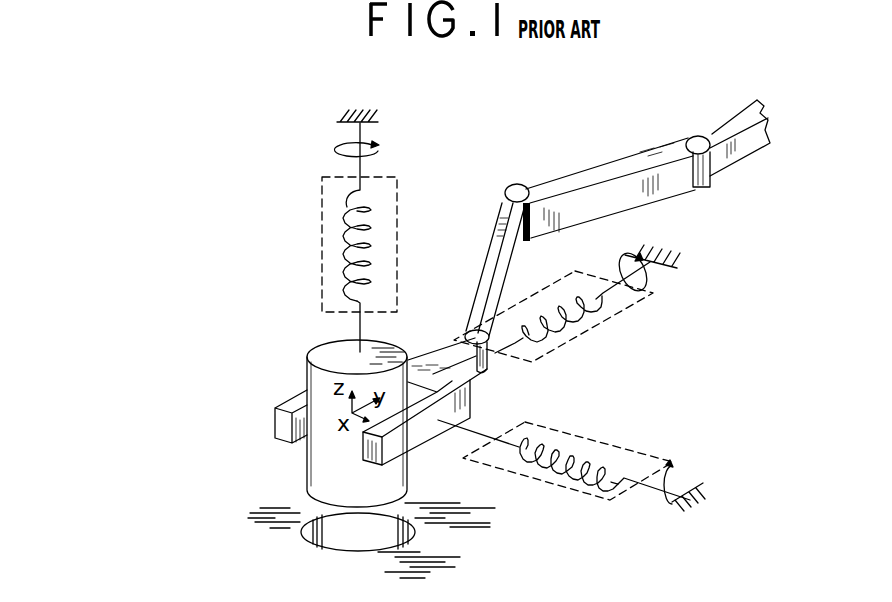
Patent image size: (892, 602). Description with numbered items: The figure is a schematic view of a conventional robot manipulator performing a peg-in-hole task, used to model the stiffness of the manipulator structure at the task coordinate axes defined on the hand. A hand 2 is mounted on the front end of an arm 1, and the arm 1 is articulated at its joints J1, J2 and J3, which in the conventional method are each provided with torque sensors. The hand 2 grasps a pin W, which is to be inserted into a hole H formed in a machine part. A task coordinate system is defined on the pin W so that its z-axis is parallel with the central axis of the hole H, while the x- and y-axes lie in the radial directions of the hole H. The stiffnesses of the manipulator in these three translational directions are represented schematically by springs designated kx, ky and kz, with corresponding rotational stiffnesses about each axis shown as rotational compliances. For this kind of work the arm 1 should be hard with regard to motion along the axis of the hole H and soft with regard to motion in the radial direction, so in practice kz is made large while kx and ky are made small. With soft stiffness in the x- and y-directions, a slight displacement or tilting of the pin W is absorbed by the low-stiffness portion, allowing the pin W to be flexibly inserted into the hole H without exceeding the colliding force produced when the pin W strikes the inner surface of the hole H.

The arm 1 is at (449, 172).
The hand 2 is at (426, 436).
The joint J1 is at (466, 331).
The joint J2 is at (517, 184).
The joint J3 is at (705, 173).
The pin W is at (328, 356).
The hole H is at (393, 527).
The stiffness in the z-direction kz is at (378, 237).
The stiffness in the y-direction ky is at (553, 312).
The stiffness in the x-direction kx is at (564, 465).